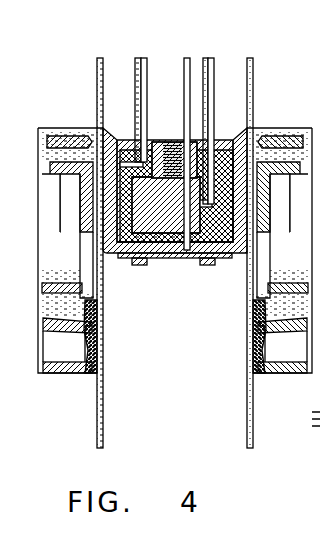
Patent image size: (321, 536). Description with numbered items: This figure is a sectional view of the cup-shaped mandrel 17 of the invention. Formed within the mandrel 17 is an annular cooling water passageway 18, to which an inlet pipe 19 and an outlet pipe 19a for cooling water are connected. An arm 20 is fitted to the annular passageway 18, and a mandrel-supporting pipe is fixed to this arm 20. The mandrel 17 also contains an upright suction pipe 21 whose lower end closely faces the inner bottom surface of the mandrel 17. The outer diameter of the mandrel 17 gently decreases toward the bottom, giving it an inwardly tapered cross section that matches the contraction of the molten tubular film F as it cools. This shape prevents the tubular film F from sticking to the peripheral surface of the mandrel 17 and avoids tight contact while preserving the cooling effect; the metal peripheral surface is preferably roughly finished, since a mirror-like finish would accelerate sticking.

The mandrel 17 is at (158, 258).
The annular cooling water passageway 18 is at (122, 205).
The inlet pipe 19 is at (210, 58).
The outlet pipe 19a is at (141, 58).
The arm 20 is at (168, 140).
The upright suction pipe 21 is at (188, 58).
The tubular film F is at (253, 100).